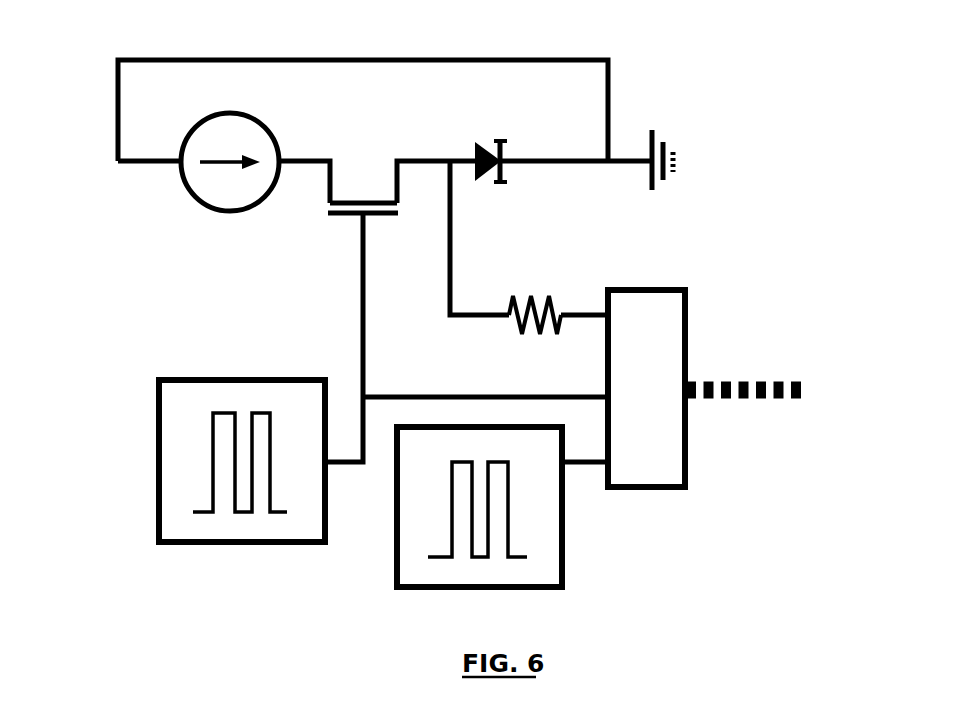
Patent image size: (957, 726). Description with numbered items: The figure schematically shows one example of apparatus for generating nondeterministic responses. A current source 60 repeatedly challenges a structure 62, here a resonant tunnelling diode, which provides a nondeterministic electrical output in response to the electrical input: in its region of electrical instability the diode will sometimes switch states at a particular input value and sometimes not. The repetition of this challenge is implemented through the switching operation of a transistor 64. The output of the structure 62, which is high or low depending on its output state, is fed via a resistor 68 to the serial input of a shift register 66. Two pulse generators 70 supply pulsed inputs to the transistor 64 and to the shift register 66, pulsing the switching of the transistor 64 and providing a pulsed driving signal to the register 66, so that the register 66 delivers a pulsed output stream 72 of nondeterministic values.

The current source 60 is at (178, 192).
The structure 62 is at (480, 138).
The transistor 64 is at (320, 213).
The shift register 66 is at (682, 281).
The resistor 68 is at (540, 282).
The pulse generators 70 is at (165, 552).
The pulsed output stream 72 is at (772, 373).